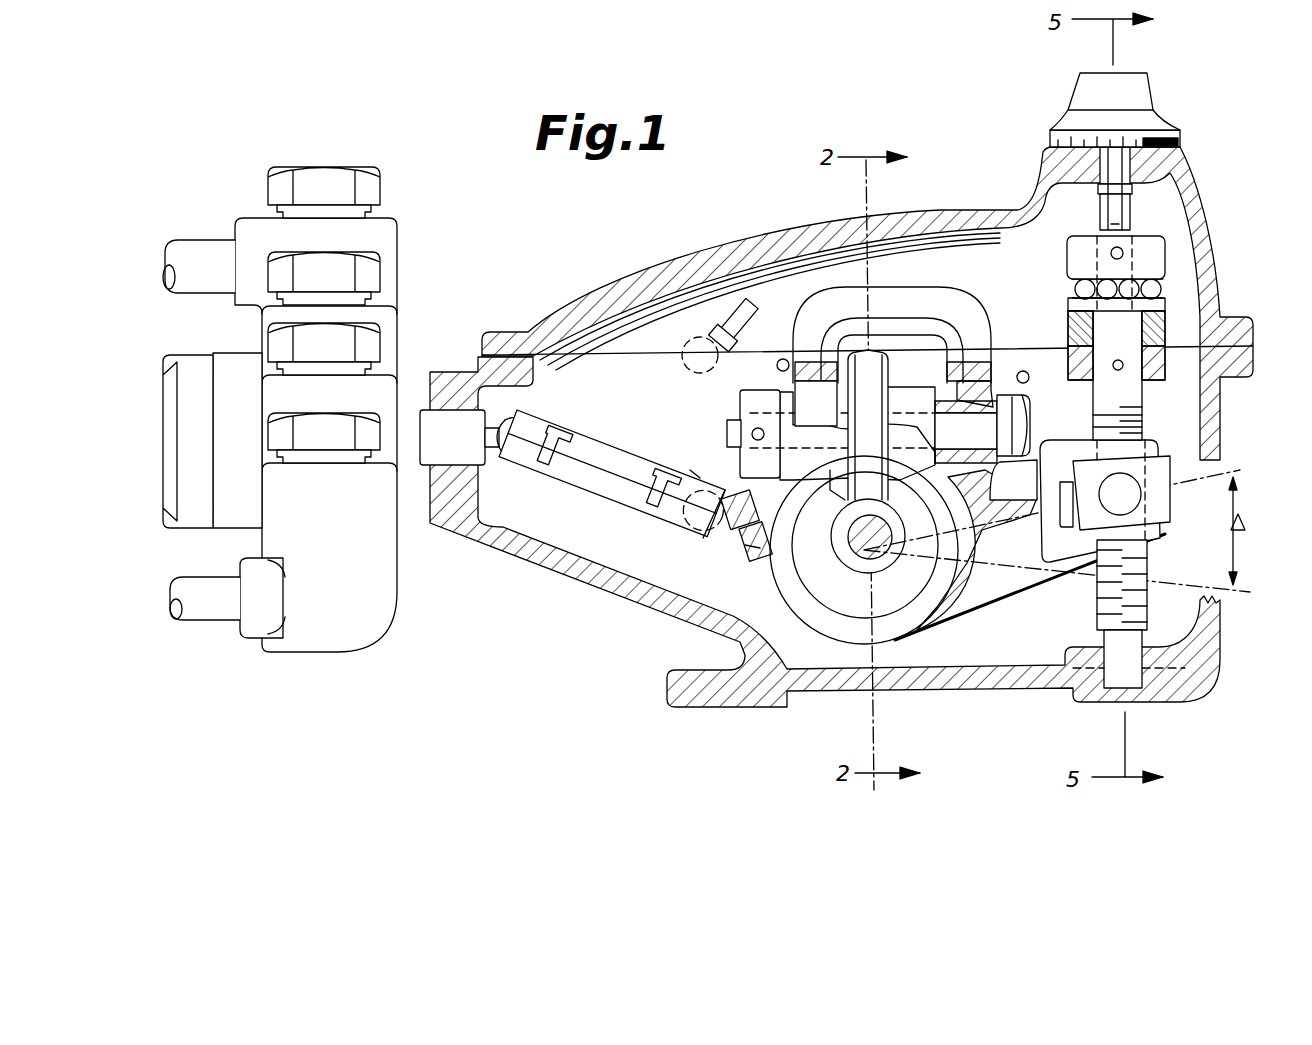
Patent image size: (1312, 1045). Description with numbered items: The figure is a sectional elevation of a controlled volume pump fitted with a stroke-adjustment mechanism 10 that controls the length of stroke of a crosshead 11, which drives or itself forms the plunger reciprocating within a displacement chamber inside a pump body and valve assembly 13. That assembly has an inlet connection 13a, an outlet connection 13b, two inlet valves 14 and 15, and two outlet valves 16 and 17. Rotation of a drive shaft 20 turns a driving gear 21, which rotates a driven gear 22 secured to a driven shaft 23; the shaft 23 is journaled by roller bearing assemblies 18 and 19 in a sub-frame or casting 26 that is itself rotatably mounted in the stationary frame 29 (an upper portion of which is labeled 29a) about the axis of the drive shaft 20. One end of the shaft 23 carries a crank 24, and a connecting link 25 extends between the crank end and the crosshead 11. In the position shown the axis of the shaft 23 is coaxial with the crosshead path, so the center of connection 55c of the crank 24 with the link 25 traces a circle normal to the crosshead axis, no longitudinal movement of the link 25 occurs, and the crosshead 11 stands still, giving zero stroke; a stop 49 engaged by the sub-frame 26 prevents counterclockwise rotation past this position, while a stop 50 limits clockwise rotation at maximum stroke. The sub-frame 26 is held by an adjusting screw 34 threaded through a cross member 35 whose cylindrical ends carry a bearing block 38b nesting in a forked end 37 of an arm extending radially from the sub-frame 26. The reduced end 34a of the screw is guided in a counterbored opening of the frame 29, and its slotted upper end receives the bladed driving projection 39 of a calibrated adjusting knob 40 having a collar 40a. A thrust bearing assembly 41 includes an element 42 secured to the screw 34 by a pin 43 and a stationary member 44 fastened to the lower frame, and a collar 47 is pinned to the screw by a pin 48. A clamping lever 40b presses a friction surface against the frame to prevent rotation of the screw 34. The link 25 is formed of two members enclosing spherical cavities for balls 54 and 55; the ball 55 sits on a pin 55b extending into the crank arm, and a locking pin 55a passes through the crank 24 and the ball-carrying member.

The stroke-adjustment mechanism 10 is at (653, 246).
The crosshead 11 is at (457, 465).
The pump body and valve assembly 13 is at (350, 550).
The inlet connection 13a is at (210, 605).
The outlet connection 13b is at (195, 250).
The inlet valve 14 is at (335, 452).
The inlet valve 15 is at (352, 345).
The outlet valve 16 is at (342, 283).
The outlet valve 17 is at (370, 210).
The roller bearing assembly 18 is at (820, 393).
The roller bearing assembly 19 is at (990, 363).
The drive shaft 20 is at (860, 553).
The driving gear 21 is at (883, 565).
The driven gear 22 is at (880, 357).
The driven shaft 23 is at (983, 425).
The crank 24 is at (735, 548).
The connecting link 25 is at (620, 455).
The sub-frame 26 is at (892, 298).
The stationary frame 29 is at (830, 688).
The housing cap 29a is at (757, 235).
The adjusting screw 34 is at (1133, 402).
The reduced end 34a is at (1133, 663).
The cross member 35 is at (1125, 500).
The forked end 37 is at (1128, 450).
The bearing block 38b is at (1150, 463).
The bladed driving projection 39 is at (1118, 210).
The calibrated adjusting knob 40 is at (1143, 100).
The collar 40a is at (1143, 185).
The clamping lever 40b is at (1180, 140).
The thrust bearing assembly 41 is at (1180, 290).
The element 42 is at (1153, 250).
The pin 43 is at (1112, 248).
The stationary member 44 is at (1168, 322).
The collar 47 is at (1078, 383).
The pin 48 is at (1123, 365).
The stop 49 is at (783, 359).
The stop 50 is at (1036, 363).
The ball 54 is at (506, 425).
The ball 55 is at (728, 495).
The locking pin 55a is at (758, 550).
The pin 55b is at (702, 538).
The center of connection 55c is at (697, 487).